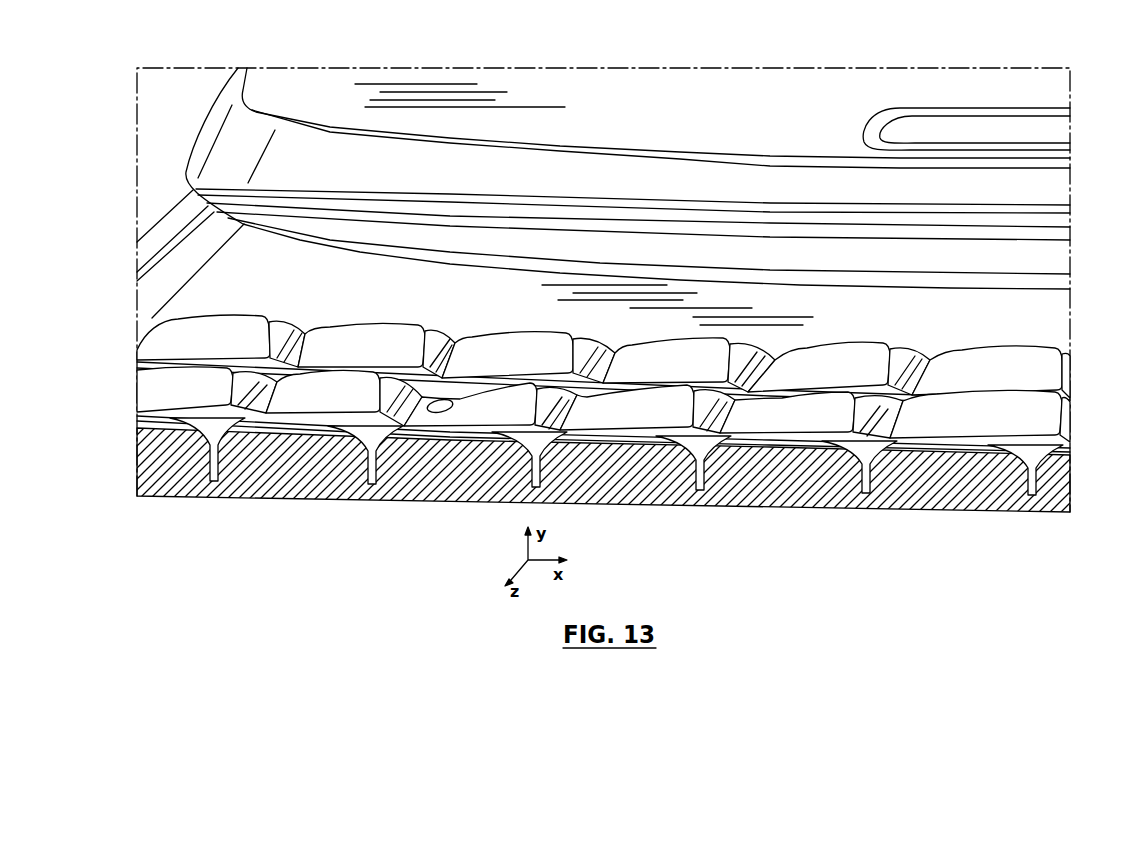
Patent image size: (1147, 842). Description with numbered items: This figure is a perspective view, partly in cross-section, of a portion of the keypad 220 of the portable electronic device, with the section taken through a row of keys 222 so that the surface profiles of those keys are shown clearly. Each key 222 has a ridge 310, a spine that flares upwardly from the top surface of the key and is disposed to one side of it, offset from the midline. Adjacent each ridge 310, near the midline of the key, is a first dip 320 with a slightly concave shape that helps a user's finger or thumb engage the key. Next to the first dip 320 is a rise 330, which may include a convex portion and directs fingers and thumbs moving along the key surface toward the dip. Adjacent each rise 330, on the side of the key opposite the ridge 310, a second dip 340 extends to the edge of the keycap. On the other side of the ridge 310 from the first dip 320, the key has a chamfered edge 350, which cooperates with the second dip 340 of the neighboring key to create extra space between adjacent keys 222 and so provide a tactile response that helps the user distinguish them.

The keypad 220 is at (152, 318).
The keys 222 is at (874, 334).
The ridge 310 is at (360, 440).
The first dip 320 is at (333, 432).
The rise 330 is at (283, 425).
The second dip 340 is at (233, 428).
The chamfered edge 350 is at (414, 380).